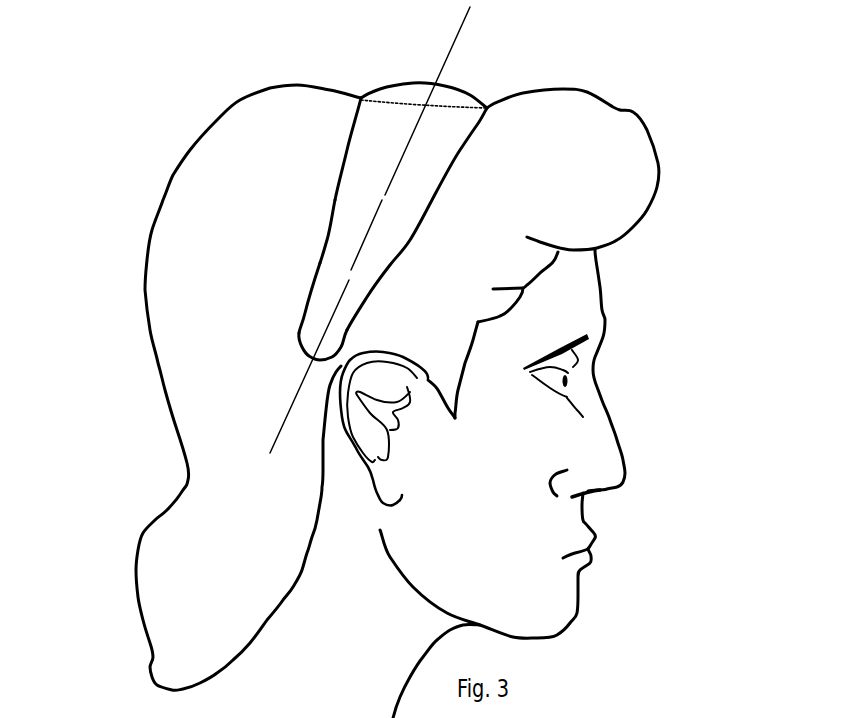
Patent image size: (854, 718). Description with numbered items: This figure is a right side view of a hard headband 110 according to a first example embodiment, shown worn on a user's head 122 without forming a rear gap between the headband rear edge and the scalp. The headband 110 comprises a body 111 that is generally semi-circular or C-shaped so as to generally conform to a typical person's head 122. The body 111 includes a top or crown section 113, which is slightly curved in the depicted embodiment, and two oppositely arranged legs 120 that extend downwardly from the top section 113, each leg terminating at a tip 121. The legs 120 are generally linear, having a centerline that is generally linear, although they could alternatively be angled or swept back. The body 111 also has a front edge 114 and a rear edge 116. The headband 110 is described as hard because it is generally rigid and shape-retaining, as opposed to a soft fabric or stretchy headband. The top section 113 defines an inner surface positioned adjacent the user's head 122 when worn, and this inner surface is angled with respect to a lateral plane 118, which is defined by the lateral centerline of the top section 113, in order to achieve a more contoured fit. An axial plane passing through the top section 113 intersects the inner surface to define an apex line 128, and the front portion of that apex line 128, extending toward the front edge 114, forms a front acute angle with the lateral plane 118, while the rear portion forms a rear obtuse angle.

The headband 110 is at (393, 230).
The body 111 is at (335, 223).
The top section 113 is at (356, 112).
The front edge 114 is at (460, 172).
The rear edge 116 is at (345, 158).
The lateral plane 118 is at (453, 50).
The legs 120 is at (320, 253).
The tip 121 is at (299, 346).
The head 122 is at (603, 282).
The apex line 128 is at (467, 105).